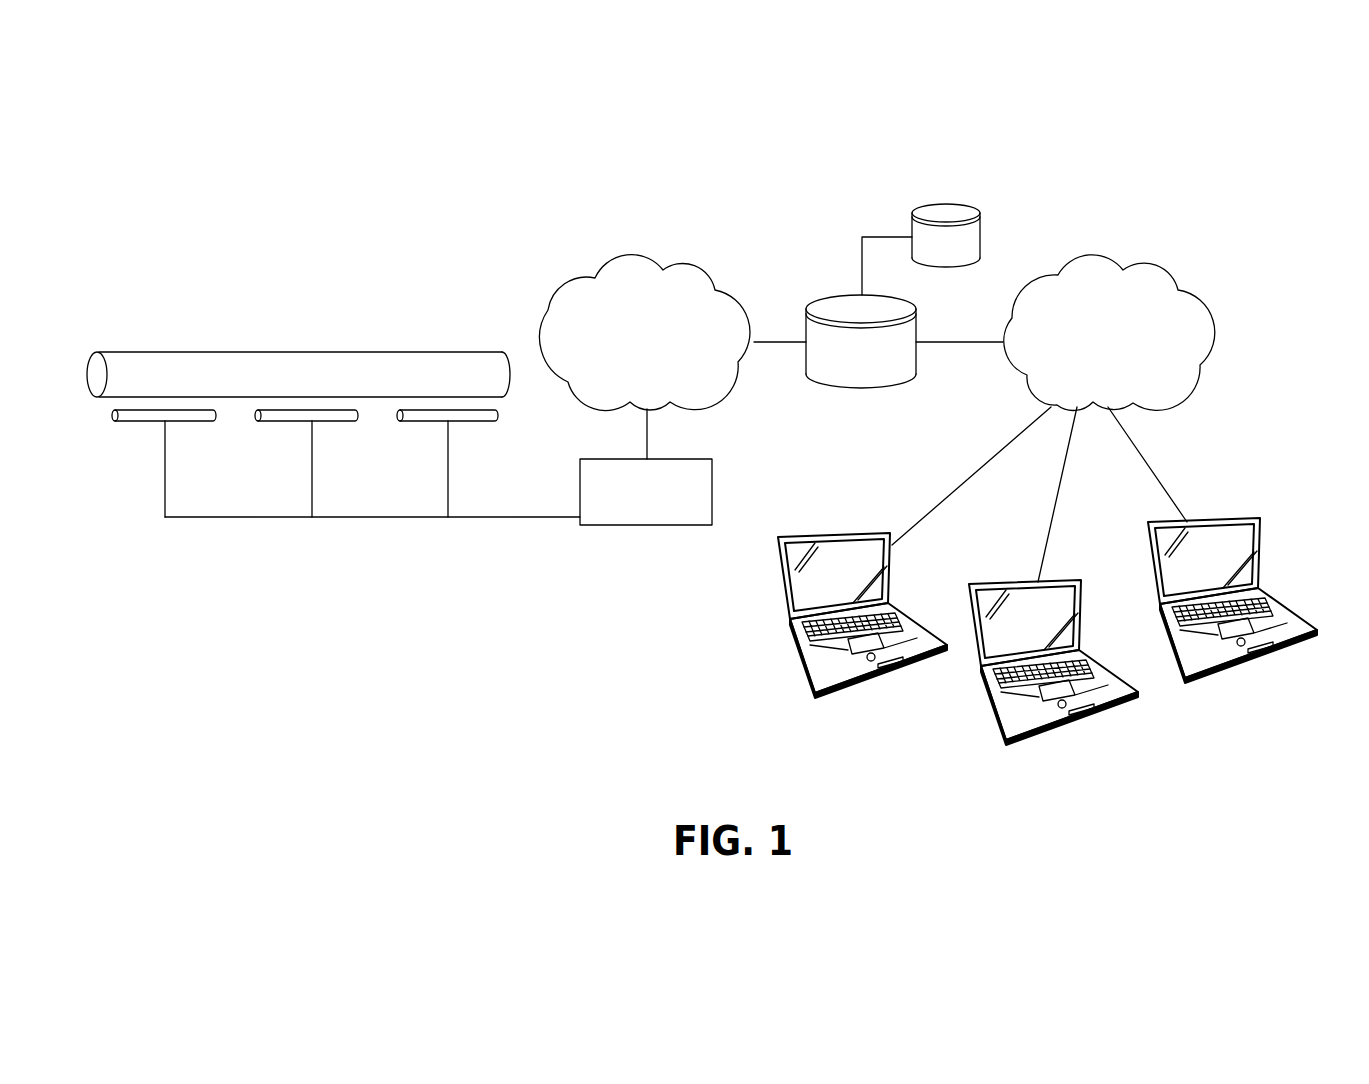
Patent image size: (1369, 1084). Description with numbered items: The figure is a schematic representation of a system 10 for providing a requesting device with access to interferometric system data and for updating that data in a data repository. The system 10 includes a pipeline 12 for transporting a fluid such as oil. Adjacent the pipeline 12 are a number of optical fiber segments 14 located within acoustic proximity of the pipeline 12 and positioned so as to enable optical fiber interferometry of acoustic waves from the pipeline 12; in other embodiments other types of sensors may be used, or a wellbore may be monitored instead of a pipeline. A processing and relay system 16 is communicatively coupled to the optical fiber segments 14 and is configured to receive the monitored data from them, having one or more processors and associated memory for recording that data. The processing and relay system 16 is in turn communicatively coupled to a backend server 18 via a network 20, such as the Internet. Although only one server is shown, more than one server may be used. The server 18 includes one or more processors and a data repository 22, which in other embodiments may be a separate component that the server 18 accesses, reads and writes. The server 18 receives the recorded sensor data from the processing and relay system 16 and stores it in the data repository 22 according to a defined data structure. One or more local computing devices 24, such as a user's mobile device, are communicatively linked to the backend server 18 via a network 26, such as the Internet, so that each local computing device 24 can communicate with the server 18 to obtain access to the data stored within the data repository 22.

The system 10 is at (350, 201).
The pipeline 12 is at (303, 351).
The optical fiber segments 14 is at (196, 423).
The processing and relay system 16 is at (658, 506).
The backend server 18 is at (874, 369).
The network 20 is at (661, 351).
The data repository 22 is at (959, 257).
The local computing devices 24 is at (849, 533).
The network 26 is at (1126, 351).